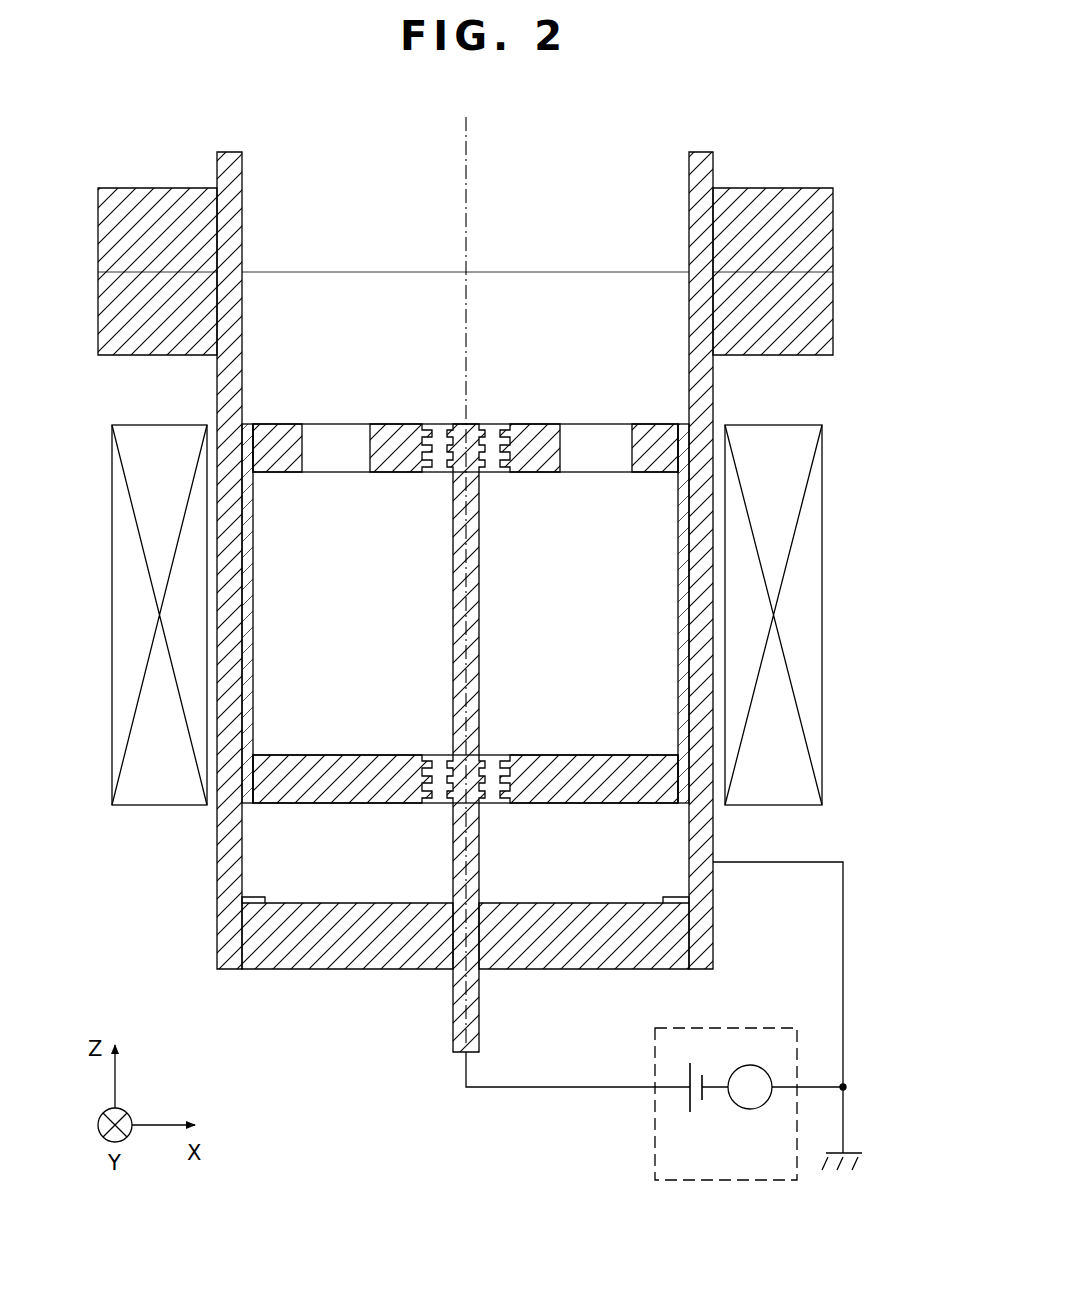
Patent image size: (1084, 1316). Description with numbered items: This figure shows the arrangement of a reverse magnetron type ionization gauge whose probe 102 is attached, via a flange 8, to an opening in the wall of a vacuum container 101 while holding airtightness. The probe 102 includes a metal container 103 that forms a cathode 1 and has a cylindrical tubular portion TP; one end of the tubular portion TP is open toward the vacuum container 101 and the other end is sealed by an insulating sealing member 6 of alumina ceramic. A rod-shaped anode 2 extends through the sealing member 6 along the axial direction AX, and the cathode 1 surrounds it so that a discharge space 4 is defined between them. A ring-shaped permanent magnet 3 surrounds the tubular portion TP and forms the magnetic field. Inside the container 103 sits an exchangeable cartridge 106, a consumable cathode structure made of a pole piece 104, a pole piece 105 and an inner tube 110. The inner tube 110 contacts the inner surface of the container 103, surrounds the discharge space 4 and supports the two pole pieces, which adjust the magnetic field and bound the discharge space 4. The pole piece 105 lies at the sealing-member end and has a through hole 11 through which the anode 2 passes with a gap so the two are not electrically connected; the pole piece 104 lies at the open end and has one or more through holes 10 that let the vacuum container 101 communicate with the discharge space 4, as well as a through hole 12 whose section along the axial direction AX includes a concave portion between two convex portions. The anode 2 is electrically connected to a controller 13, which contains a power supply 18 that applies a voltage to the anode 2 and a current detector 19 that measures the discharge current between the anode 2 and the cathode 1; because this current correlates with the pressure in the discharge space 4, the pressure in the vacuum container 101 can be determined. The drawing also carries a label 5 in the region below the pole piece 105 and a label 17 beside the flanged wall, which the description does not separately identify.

The cathode 1 is at (501, 569).
The anode 2 is at (452, 871).
The magnet 3 is at (822, 613).
The discharge space 4 is at (551, 615).
The lower space 5 is at (358, 885).
The sealing member 6 is at (270, 969).
The flange 8 is at (135, 175).
The through hole 10 is at (465, 430).
The through hole 11 is at (488, 814).
The through hole 12 is at (717, 940).
The controller 13 is at (664, 1021).
The flange 17 is at (847, 322).
The power supply 18 is at (697, 1110).
The current detector 19 is at (749, 1110).
The vacuum container 101 is at (824, 231).
The probe 102 is at (166, 896).
The container 103 is at (802, 391).
The pole piece 104 is at (533, 474).
The pole piece 105 is at (282, 804).
The cartridge 106 is at (408, 388).
The inner tube 110 is at (685, 566).
The axial direction AX is at (466, 195).
The tubular portion TP is at (713, 390).